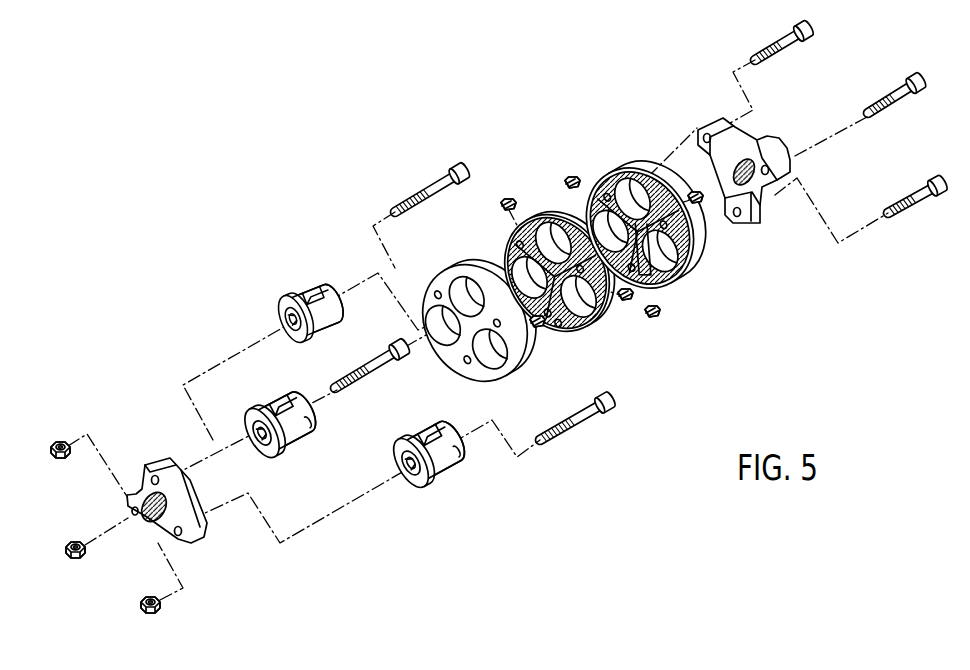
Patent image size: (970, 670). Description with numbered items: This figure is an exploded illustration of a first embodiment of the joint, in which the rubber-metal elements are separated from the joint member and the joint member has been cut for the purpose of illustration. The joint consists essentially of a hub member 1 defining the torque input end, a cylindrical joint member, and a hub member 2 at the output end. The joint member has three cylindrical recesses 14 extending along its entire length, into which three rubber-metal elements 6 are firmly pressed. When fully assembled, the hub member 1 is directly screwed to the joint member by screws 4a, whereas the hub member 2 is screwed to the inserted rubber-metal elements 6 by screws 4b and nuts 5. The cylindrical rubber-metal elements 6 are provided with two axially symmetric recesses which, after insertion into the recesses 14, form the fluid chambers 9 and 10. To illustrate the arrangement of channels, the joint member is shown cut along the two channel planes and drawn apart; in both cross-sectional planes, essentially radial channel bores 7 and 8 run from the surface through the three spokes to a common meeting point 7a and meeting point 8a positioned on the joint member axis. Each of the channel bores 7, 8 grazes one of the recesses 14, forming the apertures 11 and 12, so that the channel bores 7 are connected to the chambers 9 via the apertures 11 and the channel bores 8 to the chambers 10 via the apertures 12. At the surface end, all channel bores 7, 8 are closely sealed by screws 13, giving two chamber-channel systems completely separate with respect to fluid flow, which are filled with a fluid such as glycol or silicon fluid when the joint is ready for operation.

The hub member 1 is at (767, 144).
The hub member 2 is at (167, 462).
The screws 4a is at (890, 99).
The screws 4b is at (420, 197).
The nuts 5 is at (61, 442).
The rubber-metal elements 6 is at (298, 297).
The channel bores 7 is at (527, 236).
The meeting point 7a is at (555, 331).
The channel bores 8 is at (658, 288).
The meeting point 8a is at (670, 246).
The fluid chambers 9 is at (307, 434).
The fluid chambers 10 is at (325, 292).
The apertures 11 is at (537, 261).
The apertures 12 is at (637, 217).
The screws 13 is at (568, 180).
The cylindrical recesses 14 is at (422, 293).